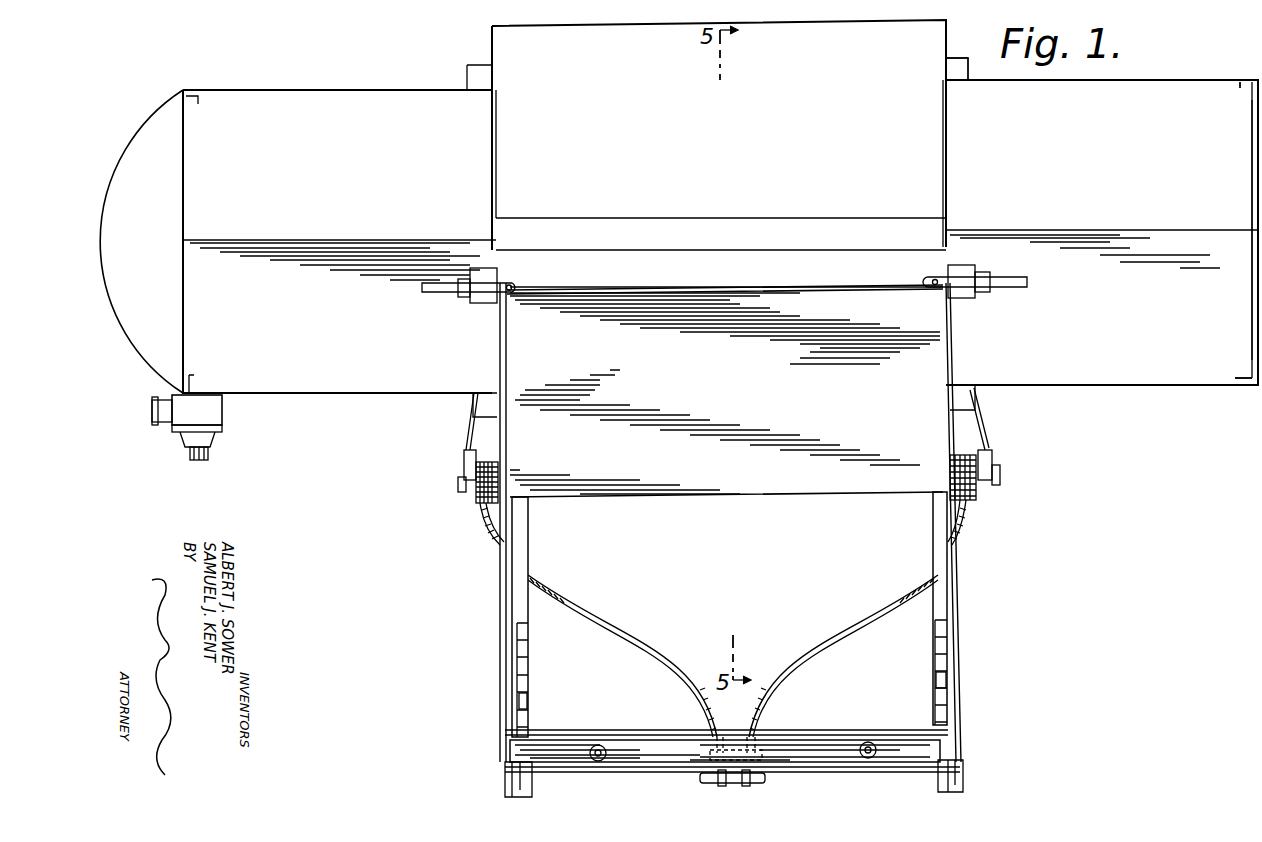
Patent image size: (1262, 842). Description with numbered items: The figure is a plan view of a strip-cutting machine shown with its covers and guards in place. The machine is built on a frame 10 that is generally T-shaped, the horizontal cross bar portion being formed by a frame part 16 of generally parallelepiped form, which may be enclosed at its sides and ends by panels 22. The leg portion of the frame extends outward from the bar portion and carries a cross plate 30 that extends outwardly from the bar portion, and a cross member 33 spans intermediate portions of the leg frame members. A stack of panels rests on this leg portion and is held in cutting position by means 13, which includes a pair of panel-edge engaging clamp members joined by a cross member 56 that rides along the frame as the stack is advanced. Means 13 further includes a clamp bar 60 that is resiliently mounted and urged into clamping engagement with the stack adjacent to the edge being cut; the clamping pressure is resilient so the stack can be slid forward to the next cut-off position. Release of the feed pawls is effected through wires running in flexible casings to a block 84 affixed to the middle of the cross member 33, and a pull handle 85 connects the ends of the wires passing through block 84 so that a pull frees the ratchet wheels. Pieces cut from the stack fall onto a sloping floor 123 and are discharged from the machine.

The frame 10 is at (359, 396).
The means for holding a stack of panels 13 is at (503, 718).
The frame part 16 is at (227, 86).
The panels 22 is at (1252, 190).
The cross plate 30 is at (746, 490).
The cross member 33 is at (805, 765).
The cross member 56 is at (686, 743).
The clamp bar 60 is at (818, 282).
The block 84 is at (772, 738).
The pull handle 85 is at (704, 781).
The sloping floor 123 is at (512, 178).